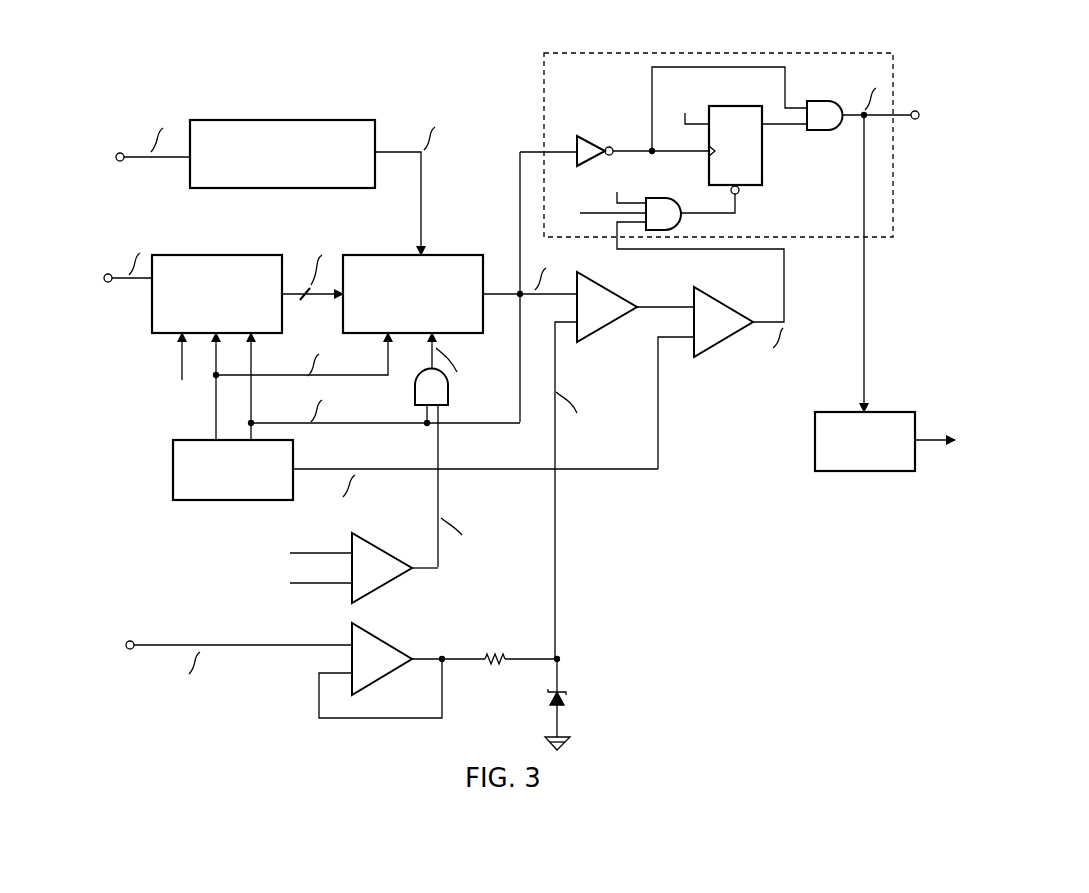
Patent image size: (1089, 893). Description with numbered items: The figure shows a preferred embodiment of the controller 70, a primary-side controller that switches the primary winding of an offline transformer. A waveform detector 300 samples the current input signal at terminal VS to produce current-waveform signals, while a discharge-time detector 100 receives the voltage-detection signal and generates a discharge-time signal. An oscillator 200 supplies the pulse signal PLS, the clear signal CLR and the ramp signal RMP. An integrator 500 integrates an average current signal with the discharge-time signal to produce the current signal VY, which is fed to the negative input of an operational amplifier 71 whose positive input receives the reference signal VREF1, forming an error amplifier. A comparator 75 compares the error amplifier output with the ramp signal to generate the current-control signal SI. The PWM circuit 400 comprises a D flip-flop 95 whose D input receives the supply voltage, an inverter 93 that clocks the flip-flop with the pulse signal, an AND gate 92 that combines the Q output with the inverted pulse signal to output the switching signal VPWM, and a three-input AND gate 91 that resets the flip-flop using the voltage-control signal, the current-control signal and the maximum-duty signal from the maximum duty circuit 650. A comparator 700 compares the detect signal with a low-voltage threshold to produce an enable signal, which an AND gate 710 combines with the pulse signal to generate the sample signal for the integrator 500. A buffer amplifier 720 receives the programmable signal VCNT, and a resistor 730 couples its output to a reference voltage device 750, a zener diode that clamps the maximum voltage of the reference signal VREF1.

The controller 70 is at (1046, 59).
The discharge-time detector 100 is at (282, 141).
The waveform detector 300 is at (217, 281).
The integrator 500 is at (413, 281).
The PWM circuit 400 is at (718, 133).
The inverter 93 is at (566, 139).
The D flip-flop 95 is at (735, 138).
The AND gate 92 is at (825, 104).
The AND gate 91 is at (663, 201).
The operational amplifier 71 is at (607, 298).
The comparator 75 is at (723, 313).
The maximum duty circuit 650 is at (863, 429).
The oscillator 200 is at (233, 458).
The AND gate 710 is at (413, 392).
The comparator 700 is at (382, 559).
The buffer amplifier 720 is at (382, 650).
The resistor 730 is at (493, 645).
The reference voltage device 750 is at (575, 698).